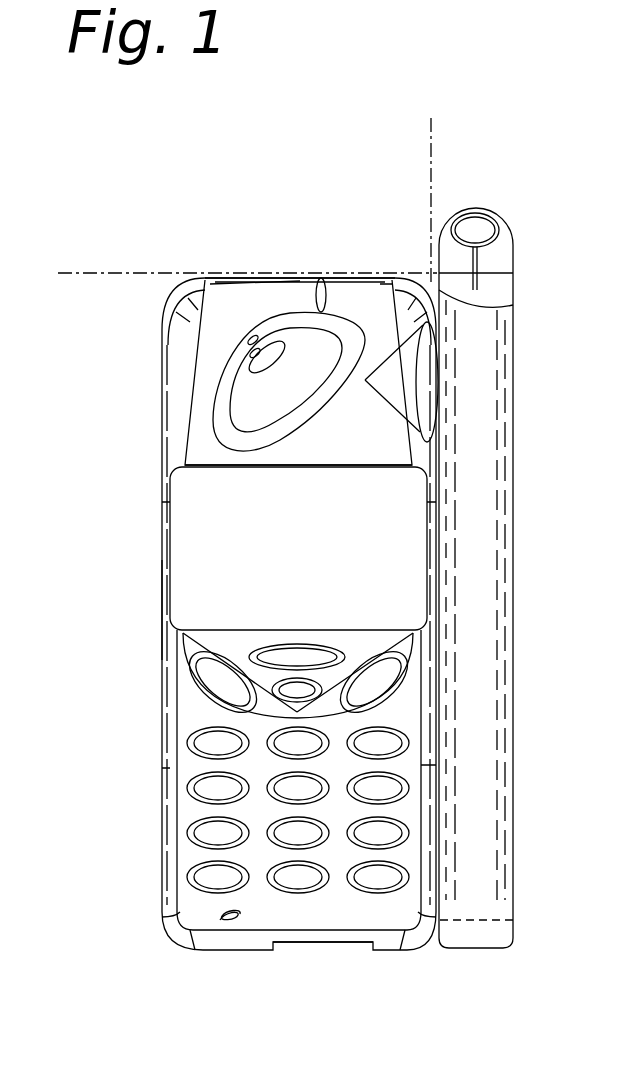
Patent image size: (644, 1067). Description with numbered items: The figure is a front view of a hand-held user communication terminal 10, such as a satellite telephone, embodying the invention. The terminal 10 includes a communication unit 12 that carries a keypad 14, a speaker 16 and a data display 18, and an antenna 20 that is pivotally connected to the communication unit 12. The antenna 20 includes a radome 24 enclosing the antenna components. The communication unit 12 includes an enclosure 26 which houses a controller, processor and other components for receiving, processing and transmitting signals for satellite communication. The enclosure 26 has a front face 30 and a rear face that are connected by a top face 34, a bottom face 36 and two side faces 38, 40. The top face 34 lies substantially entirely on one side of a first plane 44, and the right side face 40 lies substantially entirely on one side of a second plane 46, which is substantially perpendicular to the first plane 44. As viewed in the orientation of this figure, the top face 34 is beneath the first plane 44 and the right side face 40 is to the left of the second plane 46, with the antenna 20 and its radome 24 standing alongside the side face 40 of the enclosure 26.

The hand-held user communication terminal 10 is at (138, 545).
The communication unit 12 is at (222, 275).
The keypad 14 is at (208, 787).
The speaker 16 is at (257, 377).
The data display 18 is at (290, 528).
The antenna 20 is at (512, 335).
The radome 24 is at (483, 608).
The enclosure 26 is at (188, 703).
The front face 30 is at (197, 447).
The top face 34 is at (252, 277).
The bottom face 36 is at (285, 942).
The side face 38 is at (158, 613).
The side face 40 is at (440, 845).
The first plane 44 is at (127, 278).
The second plane 46 is at (431, 155).